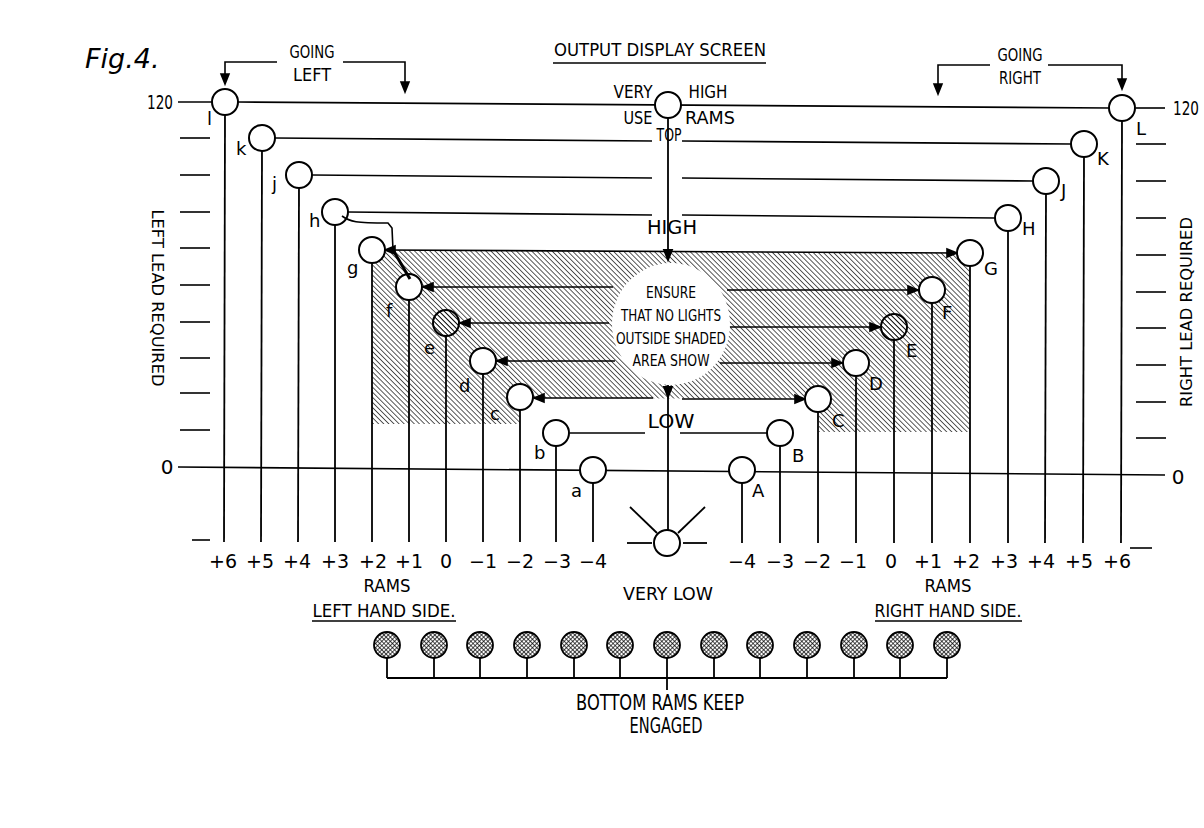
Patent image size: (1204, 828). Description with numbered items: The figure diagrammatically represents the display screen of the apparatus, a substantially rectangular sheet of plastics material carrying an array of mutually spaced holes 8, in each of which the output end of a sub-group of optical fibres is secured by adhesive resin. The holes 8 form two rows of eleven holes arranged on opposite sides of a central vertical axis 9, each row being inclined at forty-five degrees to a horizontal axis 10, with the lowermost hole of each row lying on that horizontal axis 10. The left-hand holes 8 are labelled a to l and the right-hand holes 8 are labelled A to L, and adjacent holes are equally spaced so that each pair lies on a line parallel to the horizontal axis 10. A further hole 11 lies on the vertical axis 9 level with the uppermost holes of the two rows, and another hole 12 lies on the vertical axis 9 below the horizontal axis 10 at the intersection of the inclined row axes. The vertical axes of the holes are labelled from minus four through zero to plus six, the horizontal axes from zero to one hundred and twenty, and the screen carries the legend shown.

The holes 8 is at (376, 247).
The vertical axis 9 is at (668, 170).
The horizontal axis 10 is at (325, 472).
The hole 11 is at (660, 96).
The hole 12 is at (676, 553).